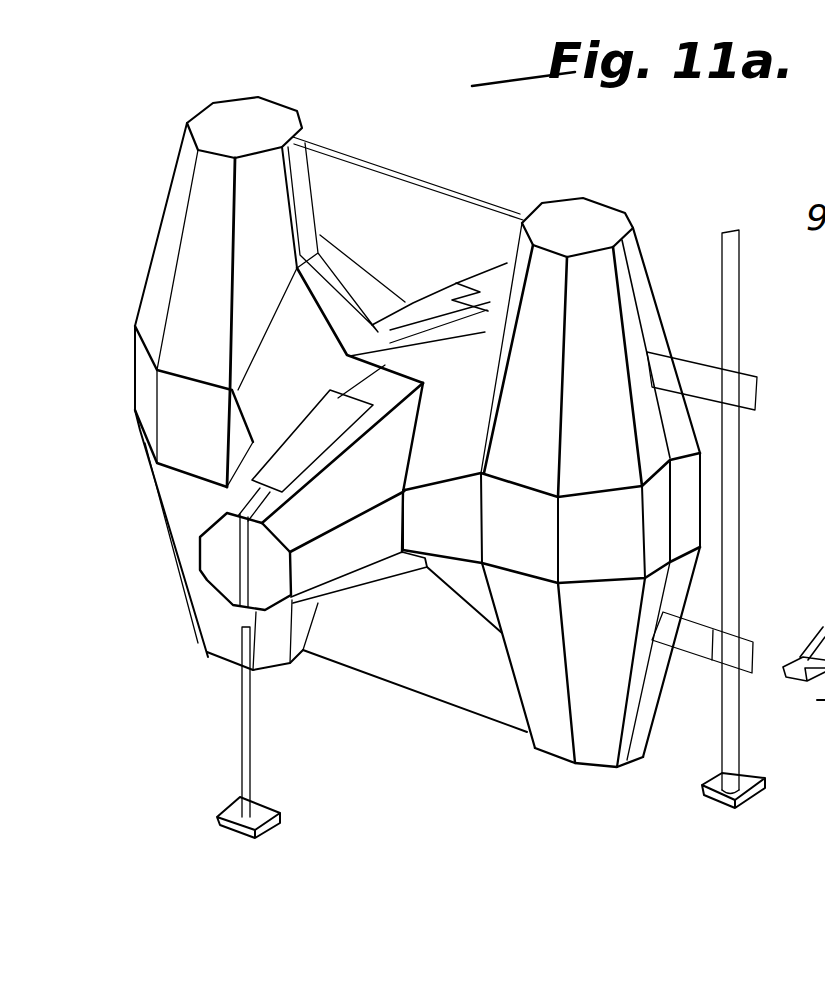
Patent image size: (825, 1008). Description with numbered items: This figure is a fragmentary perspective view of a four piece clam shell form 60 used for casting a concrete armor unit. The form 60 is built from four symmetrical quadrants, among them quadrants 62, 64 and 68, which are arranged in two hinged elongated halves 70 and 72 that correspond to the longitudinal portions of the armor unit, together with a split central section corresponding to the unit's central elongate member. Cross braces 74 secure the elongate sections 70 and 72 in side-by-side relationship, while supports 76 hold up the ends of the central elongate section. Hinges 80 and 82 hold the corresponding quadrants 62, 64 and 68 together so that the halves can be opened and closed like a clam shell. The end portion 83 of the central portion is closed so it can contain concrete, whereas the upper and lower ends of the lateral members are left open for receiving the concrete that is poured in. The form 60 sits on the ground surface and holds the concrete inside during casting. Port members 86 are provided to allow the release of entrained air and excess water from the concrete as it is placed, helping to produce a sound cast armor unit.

The four piece clam shell form 60 is at (632, 191).
The quadrant 62 is at (640, 283).
The quadrant 64 is at (328, 224).
The quadrant 68 is at (548, 740).
The hinged elongated half 70 is at (692, 296).
The hinged elongated half 72 is at (590, 812).
The cross brace 74 is at (415, 178).
The support 76 is at (252, 748).
The hinge 80 is at (733, 620).
The hinge 82 is at (212, 258).
The end portion of the central portion 83 is at (270, 538).
The port member 86 is at (482, 292).